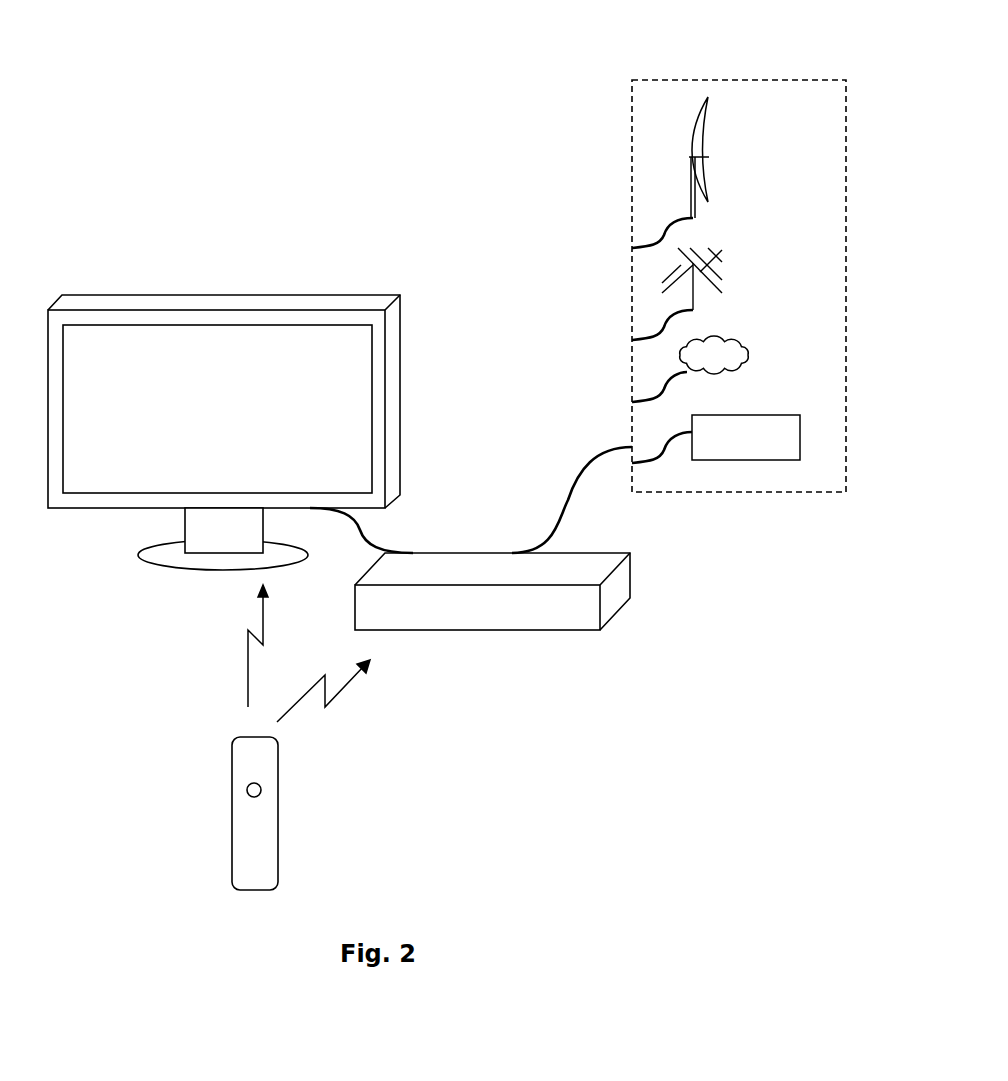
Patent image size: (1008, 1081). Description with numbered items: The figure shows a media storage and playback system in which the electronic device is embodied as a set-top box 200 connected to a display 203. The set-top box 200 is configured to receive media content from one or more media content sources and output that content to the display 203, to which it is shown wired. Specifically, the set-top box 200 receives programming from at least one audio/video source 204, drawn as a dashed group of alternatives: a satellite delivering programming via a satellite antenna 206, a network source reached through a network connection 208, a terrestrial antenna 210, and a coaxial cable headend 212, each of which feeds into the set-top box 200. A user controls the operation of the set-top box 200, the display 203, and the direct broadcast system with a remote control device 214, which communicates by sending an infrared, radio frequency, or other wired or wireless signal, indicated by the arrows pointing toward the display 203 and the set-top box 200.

The set-top box 200 is at (462, 552).
The display 203 is at (277, 293).
The audio/video source 204 is at (738, 82).
The satellite antenna 206 is at (695, 127).
The network connection 208 is at (735, 338).
The terrestrial antenna 210 is at (723, 262).
The coaxial cable headend 212 is at (723, 415).
The remote control device 214 is at (280, 825).